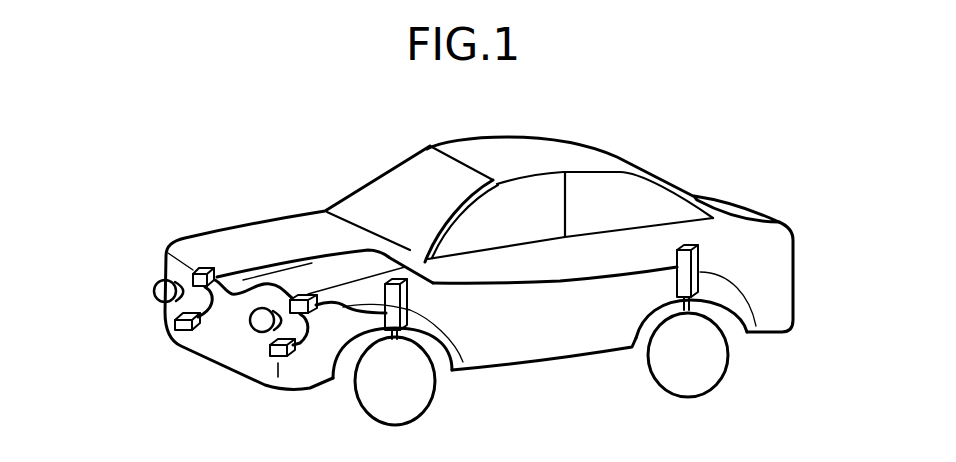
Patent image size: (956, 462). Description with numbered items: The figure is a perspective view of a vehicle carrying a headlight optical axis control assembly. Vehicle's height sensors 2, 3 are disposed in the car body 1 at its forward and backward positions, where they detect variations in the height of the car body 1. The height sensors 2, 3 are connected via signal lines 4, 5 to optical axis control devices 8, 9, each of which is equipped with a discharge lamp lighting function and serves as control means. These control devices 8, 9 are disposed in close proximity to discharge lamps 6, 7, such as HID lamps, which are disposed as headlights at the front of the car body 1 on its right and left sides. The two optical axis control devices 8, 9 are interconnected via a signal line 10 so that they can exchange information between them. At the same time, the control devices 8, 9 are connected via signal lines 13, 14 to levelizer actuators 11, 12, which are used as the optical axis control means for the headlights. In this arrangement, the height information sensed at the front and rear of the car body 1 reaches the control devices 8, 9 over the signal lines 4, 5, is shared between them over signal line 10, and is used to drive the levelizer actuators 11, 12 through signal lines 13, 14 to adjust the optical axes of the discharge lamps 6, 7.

The car body 1 is at (505, 143).
The vehicle's height sensor 2 is at (465, 366).
The vehicle's height sensor 3 is at (748, 333).
The signal line 4 is at (343, 307).
The signal line 5 is at (572, 290).
The discharge lamp 6 is at (262, 333).
The discharge lamp 7 is at (162, 292).
The optical axis control device 8 is at (298, 296).
The optical axis control device 9 is at (207, 268).
The signal line 10 is at (243, 282).
The levelizer actuator 11 is at (271, 383).
The levelizer actuator 12 is at (178, 333).
The signal line 13 is at (308, 352).
The signal line 14 is at (209, 320).